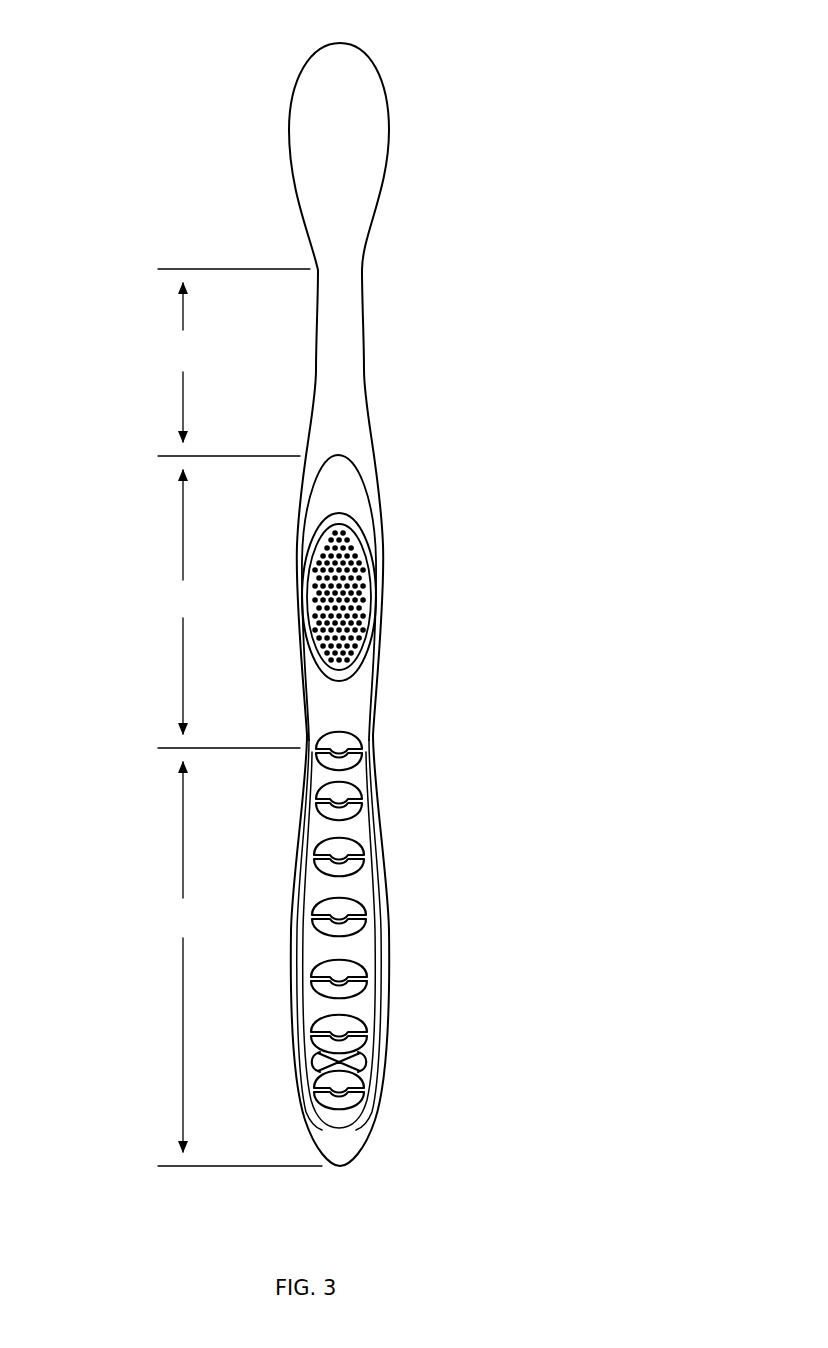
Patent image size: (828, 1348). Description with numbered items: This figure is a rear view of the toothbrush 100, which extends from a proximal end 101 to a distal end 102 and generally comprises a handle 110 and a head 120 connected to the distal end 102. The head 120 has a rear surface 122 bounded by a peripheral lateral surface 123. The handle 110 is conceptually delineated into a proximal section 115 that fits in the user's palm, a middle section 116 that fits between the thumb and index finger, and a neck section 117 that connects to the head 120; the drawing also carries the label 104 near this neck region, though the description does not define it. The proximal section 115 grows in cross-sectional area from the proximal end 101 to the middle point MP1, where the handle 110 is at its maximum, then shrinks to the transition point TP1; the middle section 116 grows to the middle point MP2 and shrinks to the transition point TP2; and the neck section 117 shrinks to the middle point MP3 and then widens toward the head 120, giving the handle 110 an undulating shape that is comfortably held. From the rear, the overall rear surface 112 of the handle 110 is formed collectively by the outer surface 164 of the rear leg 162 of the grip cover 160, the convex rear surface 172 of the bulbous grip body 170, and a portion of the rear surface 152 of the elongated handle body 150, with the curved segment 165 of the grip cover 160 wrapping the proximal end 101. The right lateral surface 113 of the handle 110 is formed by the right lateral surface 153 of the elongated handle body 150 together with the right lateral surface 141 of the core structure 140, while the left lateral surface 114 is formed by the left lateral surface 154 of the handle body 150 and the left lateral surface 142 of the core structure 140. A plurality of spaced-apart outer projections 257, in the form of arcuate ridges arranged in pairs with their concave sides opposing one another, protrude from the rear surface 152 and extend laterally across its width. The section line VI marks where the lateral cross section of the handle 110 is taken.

The toothbrush 100 is at (618, 130).
The proximal end 101 is at (340, 1168).
The distal end 102 is at (340, 42).
The neck 104 is at (349, 270).
The handle 110 is at (420, 713).
The rear surface 112 is at (350, 293).
The right lateral surface 113 is at (288, 661).
The left lateral surface 114 is at (384, 674).
The proximal section 115 is at (240, 964).
The middle section 116 is at (229, 609).
The neck section 117 is at (234, 362).
The head 120 is at (430, 148).
The rear surface 122 is at (364, 137).
The lateral surface 123 is at (388, 75).
The core structure 140 is at (402, 951).
The right lateral surface 141 is at (290, 978).
The left lateral surface 142 is at (388, 968).
The elongated handle body 150 is at (367, 358).
The rear surface 152 is at (345, 377).
The right lateral surface 153 is at (305, 470).
The left lateral surface 154 is at (376, 466).
The grip cover 160 is at (355, 1142).
The rear leg 162 is at (386, 1011).
The outer surface 164 is at (354, 1125).
The curved segment 165 is at (333, 1138).
The grip body 170 is at (367, 608).
The rear surface 172 is at (350, 541).
The outer projections 257 is at (350, 788).
The middle point MP1 is at (364, 1007).
The middle point MP2 is at (384, 582).
The middle point MP3 is at (318, 342).
The transition point TP1 is at (366, 746).
The transition point TP2 is at (368, 455).
The section line VI- VI is at (445, 845).